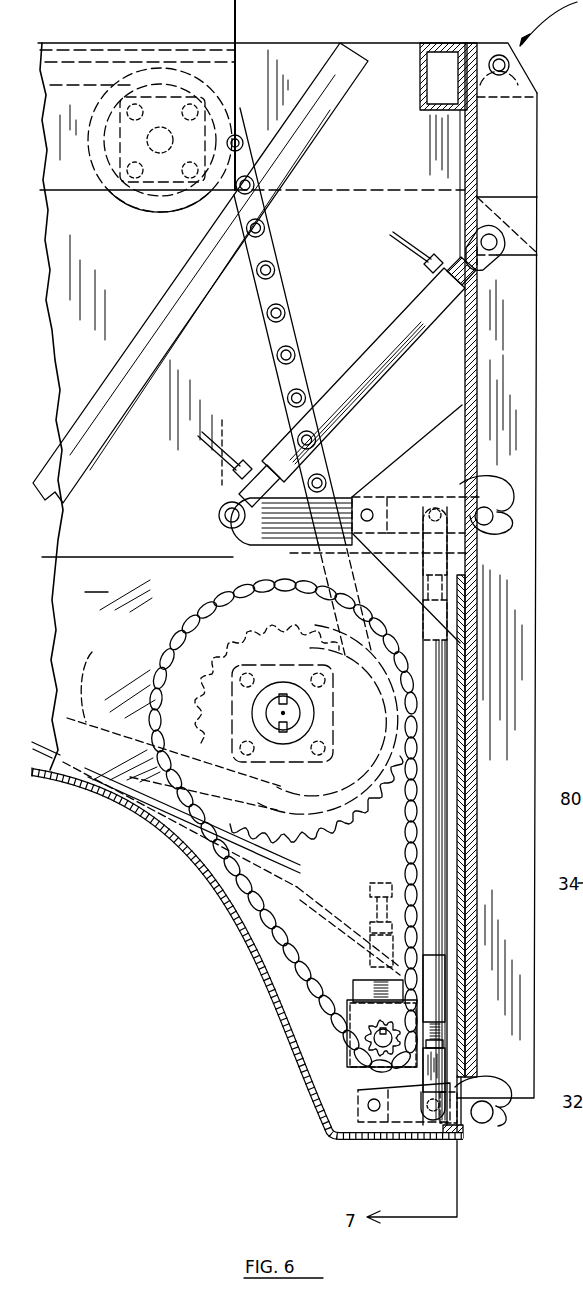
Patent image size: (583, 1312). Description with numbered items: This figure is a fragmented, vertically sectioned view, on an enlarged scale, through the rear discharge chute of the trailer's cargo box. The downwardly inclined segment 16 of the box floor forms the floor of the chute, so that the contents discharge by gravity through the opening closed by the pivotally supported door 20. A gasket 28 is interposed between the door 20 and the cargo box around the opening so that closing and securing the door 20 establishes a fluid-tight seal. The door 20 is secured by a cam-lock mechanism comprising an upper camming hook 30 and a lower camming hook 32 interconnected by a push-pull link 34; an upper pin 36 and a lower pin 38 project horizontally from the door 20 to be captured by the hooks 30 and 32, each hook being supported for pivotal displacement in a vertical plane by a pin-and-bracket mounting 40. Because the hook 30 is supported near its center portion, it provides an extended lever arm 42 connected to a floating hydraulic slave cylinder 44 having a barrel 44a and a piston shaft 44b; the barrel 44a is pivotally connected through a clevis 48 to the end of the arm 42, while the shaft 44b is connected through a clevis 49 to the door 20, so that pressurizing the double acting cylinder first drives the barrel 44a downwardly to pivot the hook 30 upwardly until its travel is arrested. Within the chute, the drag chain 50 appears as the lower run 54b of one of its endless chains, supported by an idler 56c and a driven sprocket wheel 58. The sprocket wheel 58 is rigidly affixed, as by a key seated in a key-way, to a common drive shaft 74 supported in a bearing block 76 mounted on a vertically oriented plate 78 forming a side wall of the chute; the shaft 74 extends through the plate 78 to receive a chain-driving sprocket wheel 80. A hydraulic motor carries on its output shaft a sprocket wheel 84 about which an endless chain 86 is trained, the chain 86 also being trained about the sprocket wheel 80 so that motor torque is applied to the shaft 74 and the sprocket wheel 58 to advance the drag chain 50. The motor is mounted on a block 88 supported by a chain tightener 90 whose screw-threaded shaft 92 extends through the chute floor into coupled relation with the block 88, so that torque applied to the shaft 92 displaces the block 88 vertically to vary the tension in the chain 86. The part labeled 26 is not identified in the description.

The downwardly inclined segment 16 is at (215, 880).
The door 20 is at (505, 396).
The wall plate 26 is at (479, 143).
The gasket 28 is at (480, 611).
The upper camming hook 30 is at (493, 492).
The lower camming hook 32 is at (487, 1088).
The push-pull link 34 is at (433, 802).
The upper pin 36 is at (505, 520).
The lower pin 38 is at (492, 1118).
The pin-and-bracket mounting 40 is at (402, 484).
The lever arm 42 is at (250, 545).
The floating hydraulic slave cylinder 44 is at (390, 369).
The barrel 44a is at (292, 447).
The piston shaft 44b is at (477, 277).
The clevis 48 is at (222, 510).
The clevis 49 is at (493, 235).
The drag chain 50 is at (286, 271).
The lower run 54b is at (91, 660).
The idler 56c is at (172, 213).
The driven sprocket wheel 58 is at (246, 626).
The drive shaft 74 is at (290, 720).
The bearing block 76 is at (330, 727).
The plate 78 is at (97, 582).
The chain-driving sprocket wheel 80 is at (311, 832).
The sprocket wheel 84 is at (363, 1033).
The endless chain 86 is at (413, 852).
The mounting block 88 is at (360, 1068).
The chain tightener 90 is at (364, 930).
The screw-threaded shaft 92 is at (400, 912).